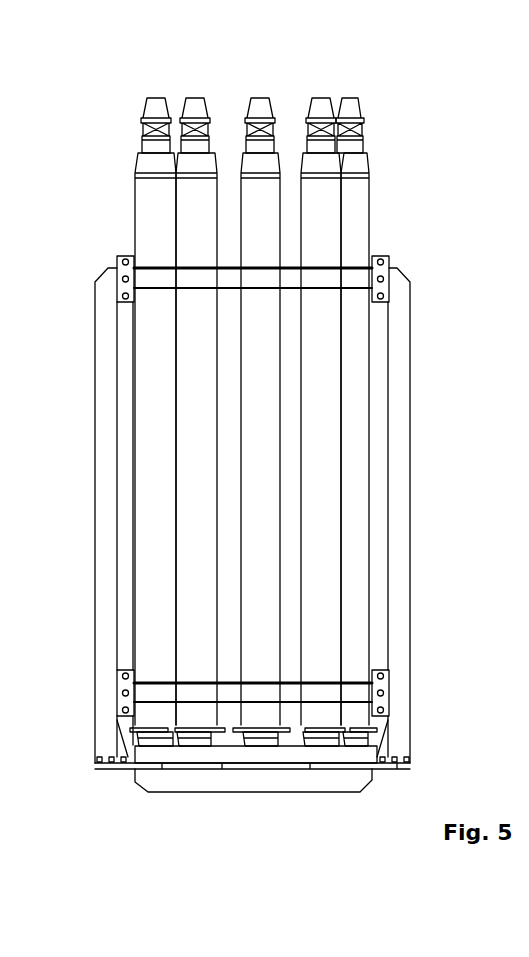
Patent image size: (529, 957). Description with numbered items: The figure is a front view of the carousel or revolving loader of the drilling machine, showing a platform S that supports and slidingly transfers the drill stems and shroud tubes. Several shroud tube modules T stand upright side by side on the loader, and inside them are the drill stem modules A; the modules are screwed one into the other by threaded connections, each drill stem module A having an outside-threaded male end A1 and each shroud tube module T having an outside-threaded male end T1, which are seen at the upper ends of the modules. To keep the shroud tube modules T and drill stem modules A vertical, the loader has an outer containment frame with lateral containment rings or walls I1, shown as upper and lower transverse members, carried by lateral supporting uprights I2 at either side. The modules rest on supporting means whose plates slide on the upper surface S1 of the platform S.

The drill stem module A is at (154, 109).
The male end of drill stem module A1 is at (360, 105).
The shroud tube module T is at (153, 206).
The male end of shroud tube module T1 is at (373, 162).
The lateral containment ring I1 is at (143, 279).
The lateral supporting upright I2 is at (108, 470).
The upper surface of platform S1 is at (291, 744).
The platform S is at (182, 780).